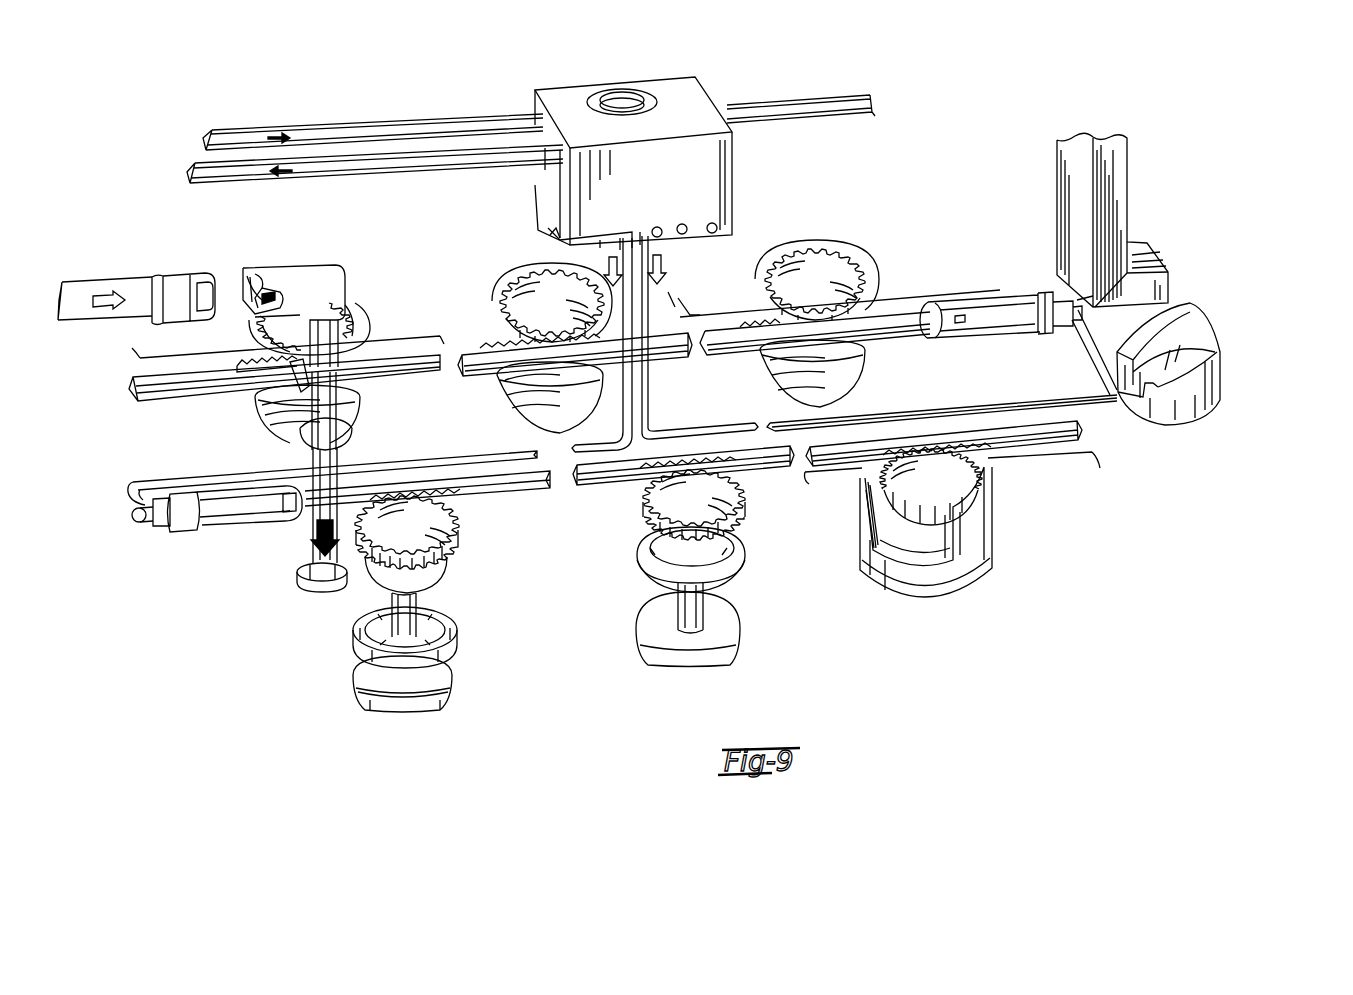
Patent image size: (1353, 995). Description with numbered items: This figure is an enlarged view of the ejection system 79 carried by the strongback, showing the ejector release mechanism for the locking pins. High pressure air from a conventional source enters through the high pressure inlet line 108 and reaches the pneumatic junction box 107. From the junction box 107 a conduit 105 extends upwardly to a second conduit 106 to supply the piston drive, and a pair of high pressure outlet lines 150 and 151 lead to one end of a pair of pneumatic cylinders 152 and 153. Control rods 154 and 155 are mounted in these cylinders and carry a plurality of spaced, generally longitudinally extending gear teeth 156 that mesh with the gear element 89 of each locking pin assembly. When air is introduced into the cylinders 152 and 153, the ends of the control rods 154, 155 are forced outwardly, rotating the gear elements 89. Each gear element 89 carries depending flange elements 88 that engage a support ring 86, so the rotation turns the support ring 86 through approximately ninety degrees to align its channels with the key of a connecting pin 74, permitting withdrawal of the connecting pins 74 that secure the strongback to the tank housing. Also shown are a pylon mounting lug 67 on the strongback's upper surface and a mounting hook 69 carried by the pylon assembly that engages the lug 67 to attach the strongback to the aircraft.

The pylon mounting lug 67 is at (1285, 374).
The mounting hook 69 is at (1056, 188).
The connecting pin 74 is at (365, 692).
The ejection system 79 is at (903, 223).
The support ring 86 is at (420, 638).
The depending flange element 88 is at (432, 596).
The gear element 89 is at (393, 283).
The conduit 105 is at (318, 243).
The second conduit 106 is at (124, 256).
The pneumatic junction box 107 is at (700, 188).
The high pressure inlet line 108 is at (258, 90).
The high pressure outlet line 150 is at (628, 395).
The high pressure outlet line 151 is at (645, 422).
The pneumatic cylinder 152 is at (232, 492).
The pneumatic cylinder 153 is at (1010, 300).
The control rod 154 is at (528, 500).
The control rod 155 is at (740, 330).
The gear teeth 156 is at (455, 345).